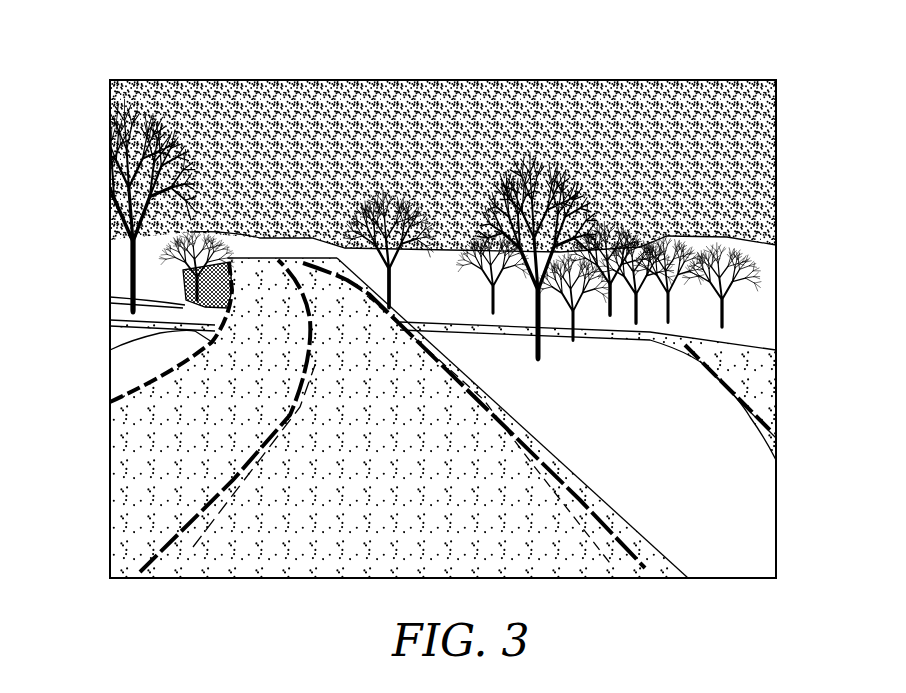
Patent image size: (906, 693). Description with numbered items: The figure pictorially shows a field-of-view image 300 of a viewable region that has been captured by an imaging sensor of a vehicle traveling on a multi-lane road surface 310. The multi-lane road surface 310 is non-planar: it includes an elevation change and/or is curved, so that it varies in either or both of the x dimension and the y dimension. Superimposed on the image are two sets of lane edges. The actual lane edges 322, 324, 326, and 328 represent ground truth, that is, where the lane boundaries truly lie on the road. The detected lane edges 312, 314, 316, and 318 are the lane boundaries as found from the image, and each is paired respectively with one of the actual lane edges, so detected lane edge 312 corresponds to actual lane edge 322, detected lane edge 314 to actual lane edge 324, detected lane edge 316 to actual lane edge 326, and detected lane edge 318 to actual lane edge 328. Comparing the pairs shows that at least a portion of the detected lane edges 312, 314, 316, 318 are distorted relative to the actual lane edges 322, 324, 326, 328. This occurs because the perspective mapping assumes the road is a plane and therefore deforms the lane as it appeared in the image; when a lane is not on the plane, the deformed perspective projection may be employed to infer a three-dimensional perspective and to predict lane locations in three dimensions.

The FOV image 300 is at (222, 79).
The multi-lane road surface 310 is at (405, 449).
The detected lane edge 312 is at (110, 350).
The detected lane edge 314 is at (197, 507).
The detected lane edge 316 is at (543, 452).
The detected lane edge 318 is at (762, 402).
The actual lane edge 322 is at (193, 347).
The actual lane edge 324 is at (230, 480).
The actual lane edge 326 is at (565, 468).
The actual lane edge 328 is at (757, 432).